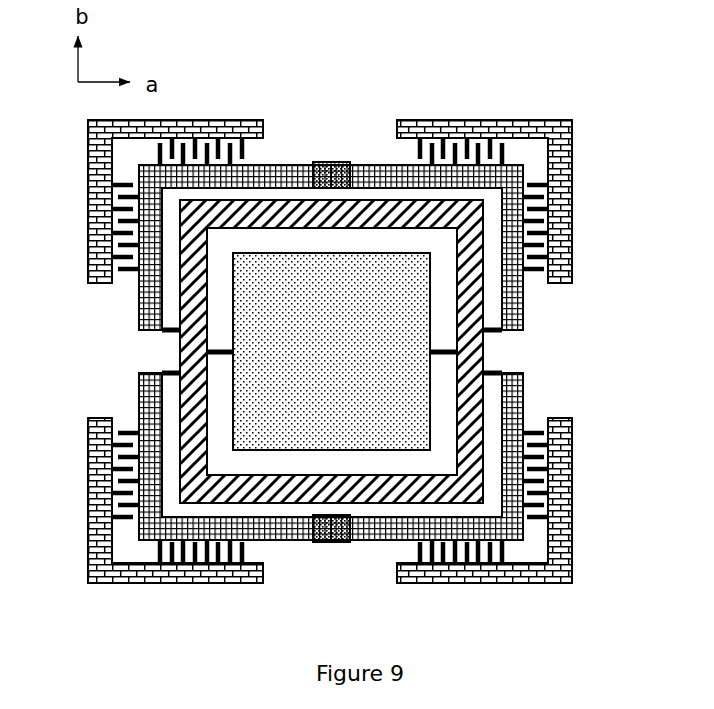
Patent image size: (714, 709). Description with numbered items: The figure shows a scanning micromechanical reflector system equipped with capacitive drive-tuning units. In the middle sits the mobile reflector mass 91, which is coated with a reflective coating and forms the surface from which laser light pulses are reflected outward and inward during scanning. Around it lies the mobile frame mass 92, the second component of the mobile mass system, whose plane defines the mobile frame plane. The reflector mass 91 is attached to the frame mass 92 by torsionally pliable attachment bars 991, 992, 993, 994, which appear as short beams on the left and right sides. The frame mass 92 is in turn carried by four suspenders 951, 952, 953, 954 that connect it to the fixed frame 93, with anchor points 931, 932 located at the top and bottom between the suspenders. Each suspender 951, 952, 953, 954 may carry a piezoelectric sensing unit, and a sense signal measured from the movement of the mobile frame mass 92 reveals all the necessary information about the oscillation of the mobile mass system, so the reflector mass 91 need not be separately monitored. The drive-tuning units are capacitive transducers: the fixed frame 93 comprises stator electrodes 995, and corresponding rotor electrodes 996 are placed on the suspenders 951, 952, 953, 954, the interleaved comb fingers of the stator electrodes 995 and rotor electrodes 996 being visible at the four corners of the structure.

The mobile reflector mass 91 is at (312, 308).
The mobile frame mass 92 is at (472, 225).
The fixed frame 93 is at (95, 180).
The anchor point 931 is at (330, 541).
The anchor point 932 is at (335, 177).
The suspender 951 is at (143, 307).
The suspender 952 is at (149, 393).
The suspender 953 is at (510, 303).
The suspender 954 is at (510, 397).
The torsionally pliable attachment bar 991 is at (166, 336).
The torsionally pliable attachment bar 992 is at (166, 368).
The torsionally pliable attachment bar 993 is at (492, 336).
The torsionally pliable attachment bar 994 is at (496, 367).
The stator electrodes 995 is at (414, 551).
The rotor electrodes 996 is at (432, 548).